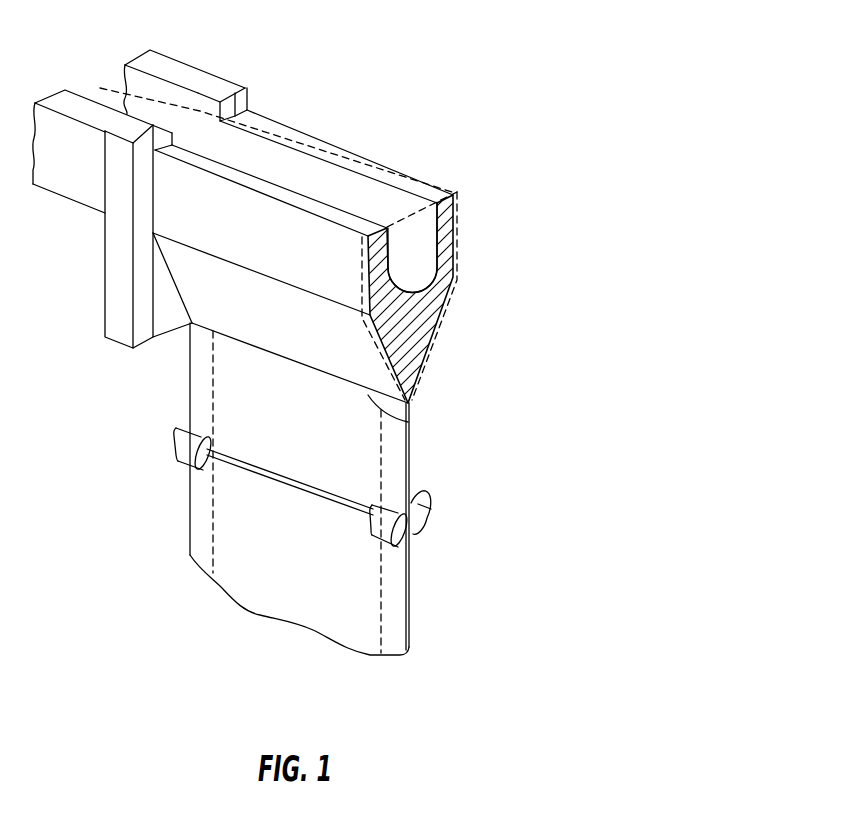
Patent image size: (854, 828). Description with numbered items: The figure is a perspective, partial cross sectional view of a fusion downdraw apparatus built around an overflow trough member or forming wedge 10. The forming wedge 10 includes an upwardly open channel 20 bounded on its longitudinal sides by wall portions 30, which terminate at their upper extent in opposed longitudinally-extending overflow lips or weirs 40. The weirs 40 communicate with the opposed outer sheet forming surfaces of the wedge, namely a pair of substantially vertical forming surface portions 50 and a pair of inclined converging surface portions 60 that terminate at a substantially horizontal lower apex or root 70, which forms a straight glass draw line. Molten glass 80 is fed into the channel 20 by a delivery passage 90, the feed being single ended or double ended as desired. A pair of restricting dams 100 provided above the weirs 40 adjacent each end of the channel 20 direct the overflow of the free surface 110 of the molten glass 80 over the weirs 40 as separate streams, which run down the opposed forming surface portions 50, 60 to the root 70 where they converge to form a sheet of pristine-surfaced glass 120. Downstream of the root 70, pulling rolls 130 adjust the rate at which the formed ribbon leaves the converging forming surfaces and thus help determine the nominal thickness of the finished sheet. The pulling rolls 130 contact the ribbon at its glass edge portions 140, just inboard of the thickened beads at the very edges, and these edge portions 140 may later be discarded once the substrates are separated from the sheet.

The forming wedge 10 is at (412, 324).
The channel 20 is at (424, 268).
The wall portions 30 is at (388, 262).
The weirs 40 is at (400, 183).
The forming surface portions 50 is at (238, 230).
The inclined converging surface portions 60 is at (300, 337).
The root 70 is at (408, 422).
The molten glass 80 is at (100, 88).
The delivery passage 90 is at (177, 76).
The restricting dams 100 is at (218, 88).
The free surface 110 is at (297, 134).
The sheet of pristine-surfaced glass 120 is at (186, 410).
The pulling rolls 130 is at (175, 440).
The glass edge portions 140 is at (403, 608).